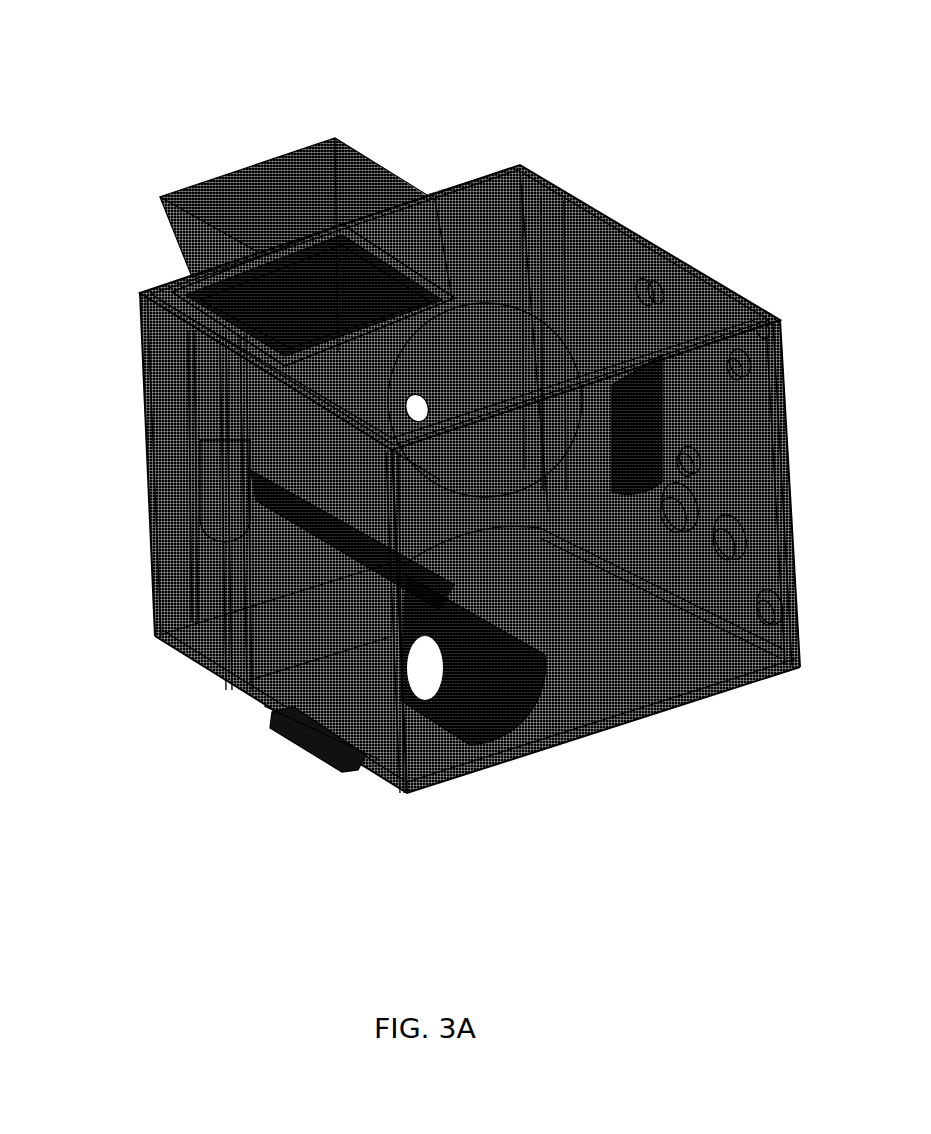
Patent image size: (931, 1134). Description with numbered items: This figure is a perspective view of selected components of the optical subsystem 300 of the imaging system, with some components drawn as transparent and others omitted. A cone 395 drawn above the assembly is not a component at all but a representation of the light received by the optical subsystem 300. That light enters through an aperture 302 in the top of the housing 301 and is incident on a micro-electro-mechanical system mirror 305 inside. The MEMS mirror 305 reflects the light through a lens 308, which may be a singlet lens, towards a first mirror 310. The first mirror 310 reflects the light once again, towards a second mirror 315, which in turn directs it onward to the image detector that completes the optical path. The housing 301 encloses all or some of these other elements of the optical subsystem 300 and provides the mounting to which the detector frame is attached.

The optical subsystem 300 is at (628, 47).
The housing 301 is at (680, 250).
The aperture 302 is at (422, 265).
The micro-electro-mechanical system (MEMS) mirror 305 is at (265, 552).
The lens 308 is at (430, 465).
The first mirror 310 is at (548, 312).
The second mirror 315 is at (655, 424).
The cone 395 is at (238, 197).